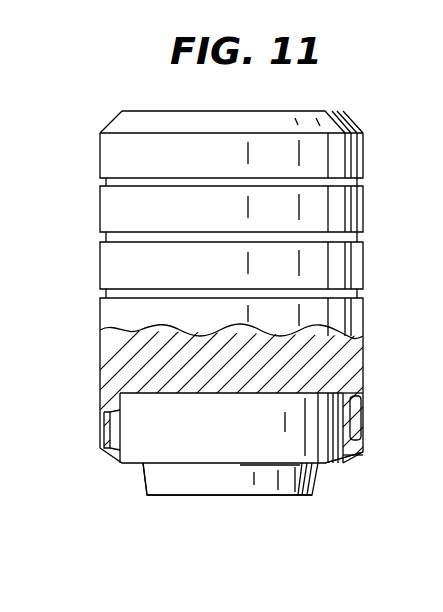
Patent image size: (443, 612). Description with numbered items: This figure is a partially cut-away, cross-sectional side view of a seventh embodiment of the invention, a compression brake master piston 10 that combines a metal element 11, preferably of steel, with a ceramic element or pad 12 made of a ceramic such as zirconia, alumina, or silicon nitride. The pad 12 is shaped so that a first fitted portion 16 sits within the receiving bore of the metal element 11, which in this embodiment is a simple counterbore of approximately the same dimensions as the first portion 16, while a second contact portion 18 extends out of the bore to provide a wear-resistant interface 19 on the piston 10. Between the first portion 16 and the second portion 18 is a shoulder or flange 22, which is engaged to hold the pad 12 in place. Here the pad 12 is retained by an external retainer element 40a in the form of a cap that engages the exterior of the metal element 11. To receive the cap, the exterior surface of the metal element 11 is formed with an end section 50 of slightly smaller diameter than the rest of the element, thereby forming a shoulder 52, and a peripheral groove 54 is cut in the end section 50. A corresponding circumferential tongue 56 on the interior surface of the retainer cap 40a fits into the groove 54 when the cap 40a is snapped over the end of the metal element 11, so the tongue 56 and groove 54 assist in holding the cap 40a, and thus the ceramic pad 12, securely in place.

The compression brake master piston 10 is at (374, 132).
The metal element 11 is at (365, 218).
The first fitted portion 16 is at (147, 404).
The shoulder 52 is at (104, 420).
The peripheral groove 54 is at (108, 426).
The circumferential tongue 56 is at (364, 395).
The external retainer element 40a is at (358, 413).
The end section 50 is at (358, 442).
The shoulder or flange 22 is at (330, 464).
The ceramic element or pad 12 is at (320, 487).
The second contact portion 18 is at (146, 489).
The wear-resistant interface 19 is at (255, 497).